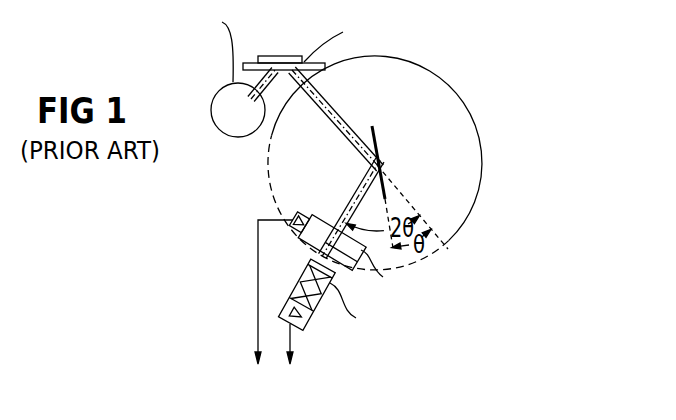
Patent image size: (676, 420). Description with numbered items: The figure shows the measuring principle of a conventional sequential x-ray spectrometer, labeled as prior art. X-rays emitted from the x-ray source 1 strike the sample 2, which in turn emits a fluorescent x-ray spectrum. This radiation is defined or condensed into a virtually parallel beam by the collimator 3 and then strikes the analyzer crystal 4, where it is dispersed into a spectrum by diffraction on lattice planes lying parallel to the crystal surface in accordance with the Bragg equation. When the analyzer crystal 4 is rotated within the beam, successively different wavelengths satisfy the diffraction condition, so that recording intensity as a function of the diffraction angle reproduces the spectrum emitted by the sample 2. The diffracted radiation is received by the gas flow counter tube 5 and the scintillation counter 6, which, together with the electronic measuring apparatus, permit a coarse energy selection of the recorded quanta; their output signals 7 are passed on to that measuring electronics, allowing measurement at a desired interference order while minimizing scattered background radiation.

The x-ray source 1 is at (222, 93).
The sample 2 is at (301, 58).
The collimator 3 is at (334, 111).
The analyzer crystal 4 is at (384, 142).
The gas flow counter tube 5 is at (347, 256).
The scintillation counter 6 is at (317, 302).
The output signals 7 is at (274, 306).